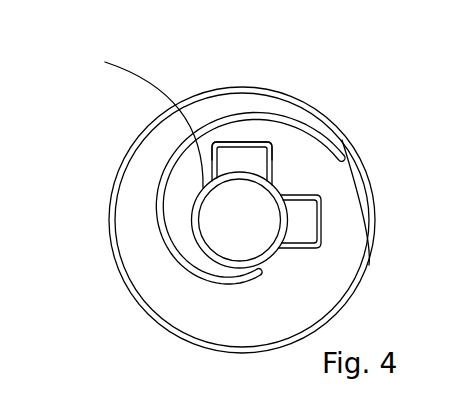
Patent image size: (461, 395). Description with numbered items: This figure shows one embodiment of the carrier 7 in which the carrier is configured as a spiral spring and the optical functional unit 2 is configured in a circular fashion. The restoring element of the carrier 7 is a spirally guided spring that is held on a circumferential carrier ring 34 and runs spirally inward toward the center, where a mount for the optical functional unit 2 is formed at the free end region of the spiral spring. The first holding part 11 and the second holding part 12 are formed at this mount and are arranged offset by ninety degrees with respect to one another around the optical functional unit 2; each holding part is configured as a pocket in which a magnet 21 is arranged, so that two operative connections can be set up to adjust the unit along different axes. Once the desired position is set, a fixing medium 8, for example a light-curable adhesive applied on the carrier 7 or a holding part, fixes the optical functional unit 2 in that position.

The optical functional unit 2 is at (242, 205).
The carrier 7 is at (144, 119).
The fixing medium 8 is at (296, 155).
The first holding part 11 is at (320, 238).
The second holding part 12 is at (240, 153).
The magnet 21 is at (223, 142).
The carrier ring 34 is at (343, 300).